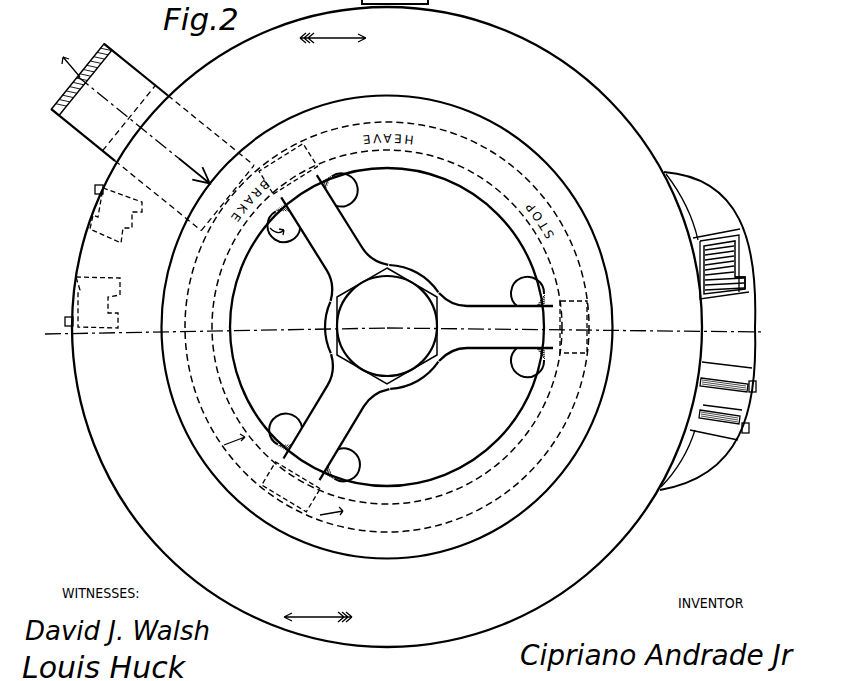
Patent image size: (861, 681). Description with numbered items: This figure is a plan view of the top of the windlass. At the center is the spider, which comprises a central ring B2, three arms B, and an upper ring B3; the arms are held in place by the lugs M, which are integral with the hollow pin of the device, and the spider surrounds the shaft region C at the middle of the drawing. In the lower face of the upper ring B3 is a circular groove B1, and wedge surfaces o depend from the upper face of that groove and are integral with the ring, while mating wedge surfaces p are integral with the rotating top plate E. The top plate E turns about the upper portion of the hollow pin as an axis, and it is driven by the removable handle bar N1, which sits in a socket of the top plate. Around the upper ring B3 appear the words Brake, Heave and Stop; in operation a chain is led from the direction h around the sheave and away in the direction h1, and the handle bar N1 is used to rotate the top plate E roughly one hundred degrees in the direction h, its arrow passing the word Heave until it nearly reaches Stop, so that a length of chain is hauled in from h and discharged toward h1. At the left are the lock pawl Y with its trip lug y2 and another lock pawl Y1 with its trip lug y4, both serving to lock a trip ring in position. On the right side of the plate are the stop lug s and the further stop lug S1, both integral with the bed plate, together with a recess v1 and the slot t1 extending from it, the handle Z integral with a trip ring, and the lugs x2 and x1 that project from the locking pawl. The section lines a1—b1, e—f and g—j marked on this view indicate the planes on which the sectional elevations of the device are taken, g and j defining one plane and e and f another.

The top plate E is at (608, 549).
The spider arms B is at (417, 327).
The circular groove B1 is at (547, 480).
The central ring B2 is at (425, 288).
The upper ring B3 is at (432, 468).
The shaft C is at (412, 360).
The lugs M is at (350, 186).
The wedge surfaces p is at (318, 132).
The wedge surfaces o is at (285, 160).
The removable handle bar N1 is at (128, 80).
The section line g—j g is at (59, 63).
The trip lug y2 is at (95, 188).
The lock pawl Y is at (132, 220).
The trip lug y4 is at (65, 320).
The lock pawl Y1 is at (110, 302).
The section line a′—b′ a1 is at (206, 342).
The section line a′—b′ b1 is at (587, 334).
The chain direction h is at (333, 30).
The chain direction h1 is at (318, 609).
The section line g— j is at (277, 238).
The section line e—f e is at (234, 441).
The section line e— f is at (336, 516).
The stop lug s is at (732, 205).
The stop lug S1 is at (720, 478).
The recess v1 is at (730, 256).
The slot t1 is at (745, 285).
The handle Z is at (742, 409).
The lug x2 is at (756, 386).
The lug x1 is at (749, 428).